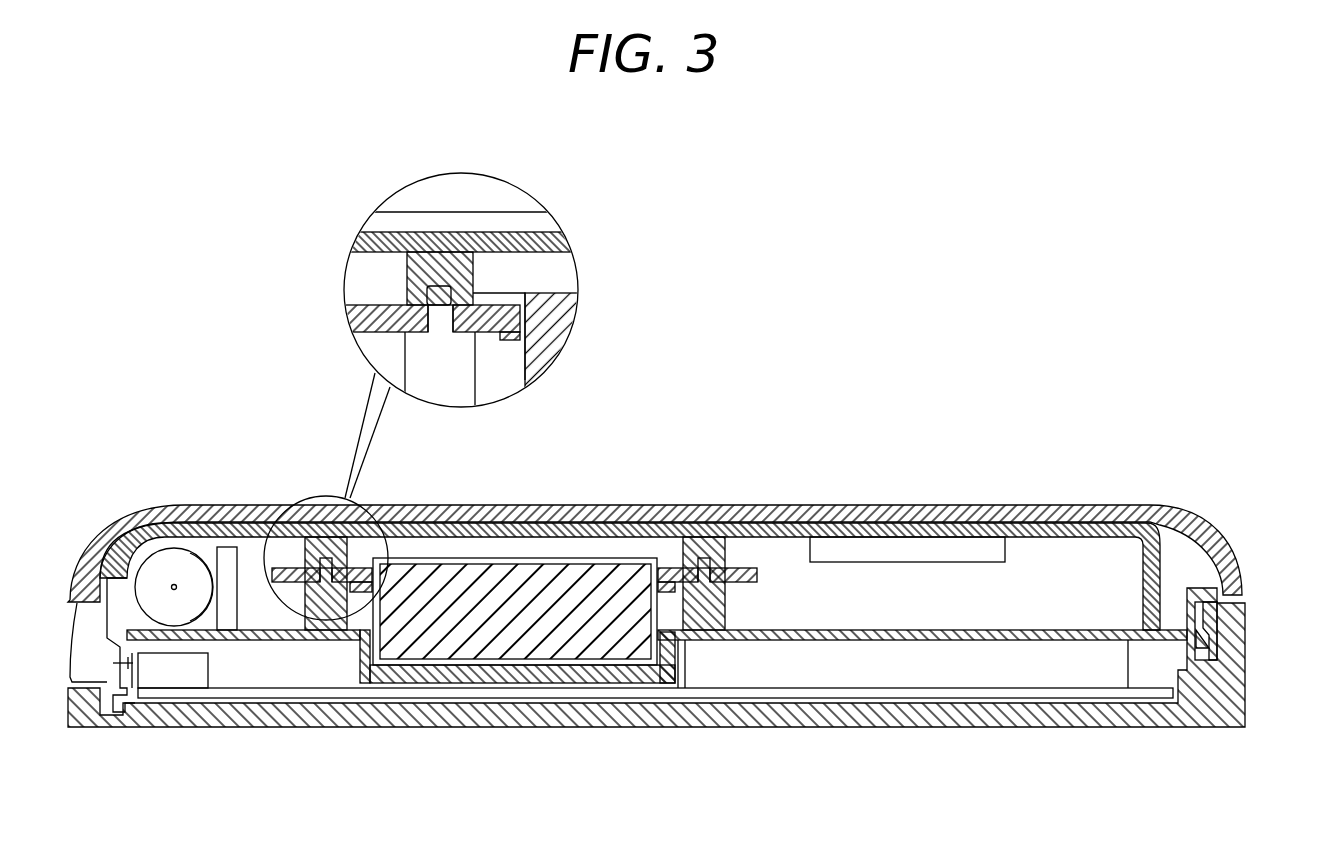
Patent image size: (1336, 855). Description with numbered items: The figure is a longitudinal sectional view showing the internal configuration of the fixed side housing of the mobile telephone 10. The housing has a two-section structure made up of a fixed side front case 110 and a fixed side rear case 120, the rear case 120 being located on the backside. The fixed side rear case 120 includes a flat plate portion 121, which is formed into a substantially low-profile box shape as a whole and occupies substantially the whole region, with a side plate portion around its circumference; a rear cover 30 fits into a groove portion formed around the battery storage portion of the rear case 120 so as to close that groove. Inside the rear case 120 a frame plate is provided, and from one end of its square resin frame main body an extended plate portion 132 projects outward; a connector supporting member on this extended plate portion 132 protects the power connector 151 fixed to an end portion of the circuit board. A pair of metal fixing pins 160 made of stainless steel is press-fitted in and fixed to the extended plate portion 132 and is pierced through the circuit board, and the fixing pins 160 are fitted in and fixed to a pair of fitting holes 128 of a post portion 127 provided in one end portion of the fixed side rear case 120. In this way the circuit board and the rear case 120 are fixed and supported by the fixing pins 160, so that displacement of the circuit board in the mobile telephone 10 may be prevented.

The mobile telephone 10 is at (1099, 502).
The rear cover 30 is at (997, 540).
The fixed side front case 110 is at (295, 712).
The fixed side rear case 120 is at (1223, 594).
The flat plate portion 121 is at (365, 242).
The post portion 127 is at (400, 268).
The fitting hole 128 is at (422, 297).
The extended plate portion 132 is at (365, 325).
The power connector 151 is at (528, 650).
The fixing pin 160 is at (440, 320).